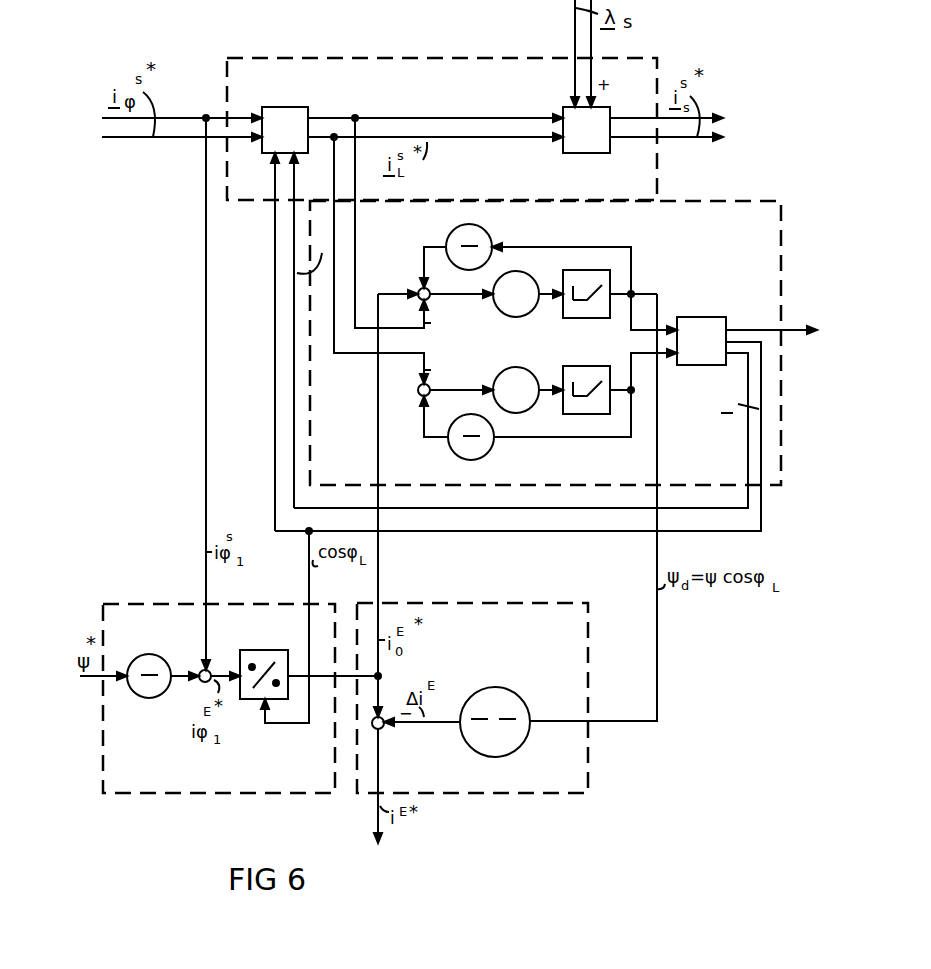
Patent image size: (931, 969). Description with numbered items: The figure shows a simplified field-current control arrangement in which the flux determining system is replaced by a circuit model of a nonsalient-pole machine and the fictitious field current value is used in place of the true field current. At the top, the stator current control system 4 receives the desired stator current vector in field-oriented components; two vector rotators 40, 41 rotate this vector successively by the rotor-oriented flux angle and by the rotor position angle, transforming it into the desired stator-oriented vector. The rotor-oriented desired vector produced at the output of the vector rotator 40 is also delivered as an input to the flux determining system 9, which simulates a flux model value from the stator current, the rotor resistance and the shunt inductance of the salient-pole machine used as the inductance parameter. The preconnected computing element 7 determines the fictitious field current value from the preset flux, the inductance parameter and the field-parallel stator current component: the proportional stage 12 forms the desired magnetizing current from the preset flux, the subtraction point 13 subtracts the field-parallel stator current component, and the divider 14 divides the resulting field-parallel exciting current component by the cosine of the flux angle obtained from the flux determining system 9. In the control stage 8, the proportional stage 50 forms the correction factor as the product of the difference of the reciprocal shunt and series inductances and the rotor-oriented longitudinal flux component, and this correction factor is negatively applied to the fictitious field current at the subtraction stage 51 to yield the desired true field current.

The stator current control system 4 is at (419, 58).
The vector rotator 40 is at (290, 107).
The vector rotator 41 is at (563, 107).
The flux determining system 9 is at (804, 254).
The computing element 7 is at (196, 803).
The control stage 8 is at (495, 795).
The proportional stage 12 is at (147, 654).
The subtraction point 13 is at (199, 672).
The divider 14 is at (261, 650).
The proportional stage 50 is at (520, 747).
The subtraction stage 51 is at (384, 729).